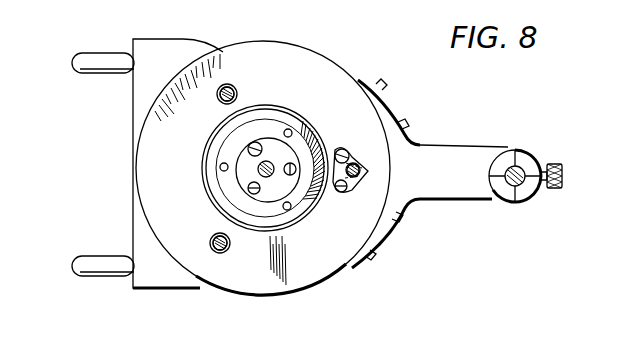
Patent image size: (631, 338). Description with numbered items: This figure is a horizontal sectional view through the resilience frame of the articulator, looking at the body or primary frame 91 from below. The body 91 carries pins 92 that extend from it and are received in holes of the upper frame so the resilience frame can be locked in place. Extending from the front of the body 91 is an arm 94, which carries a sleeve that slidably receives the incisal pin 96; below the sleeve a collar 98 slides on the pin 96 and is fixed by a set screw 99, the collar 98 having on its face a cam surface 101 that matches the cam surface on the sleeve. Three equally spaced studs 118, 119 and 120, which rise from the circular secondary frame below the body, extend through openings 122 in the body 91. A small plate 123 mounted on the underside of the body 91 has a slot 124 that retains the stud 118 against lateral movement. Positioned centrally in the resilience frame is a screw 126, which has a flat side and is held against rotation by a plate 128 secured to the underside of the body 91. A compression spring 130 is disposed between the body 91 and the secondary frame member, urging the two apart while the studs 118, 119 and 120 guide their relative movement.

The body or primary frame 91 is at (322, 54).
The pins 92 is at (84, 64).
The arm 94 is at (460, 158).
The incisal pin 96 is at (518, 167).
The collar 98 is at (498, 200).
The set screw 99 is at (563, 177).
The cam surface 101 is at (527, 191).
The stud 118 is at (359, 168).
The stud 119 is at (225, 85).
The stud 120 is at (220, 253).
The openings 122 is at (233, 89).
The small plate 123 is at (347, 152).
The slot 124 is at (357, 179).
The screw 126 is at (258, 171).
The plate 128 is at (273, 143).
The compression spring 130 is at (298, 211).